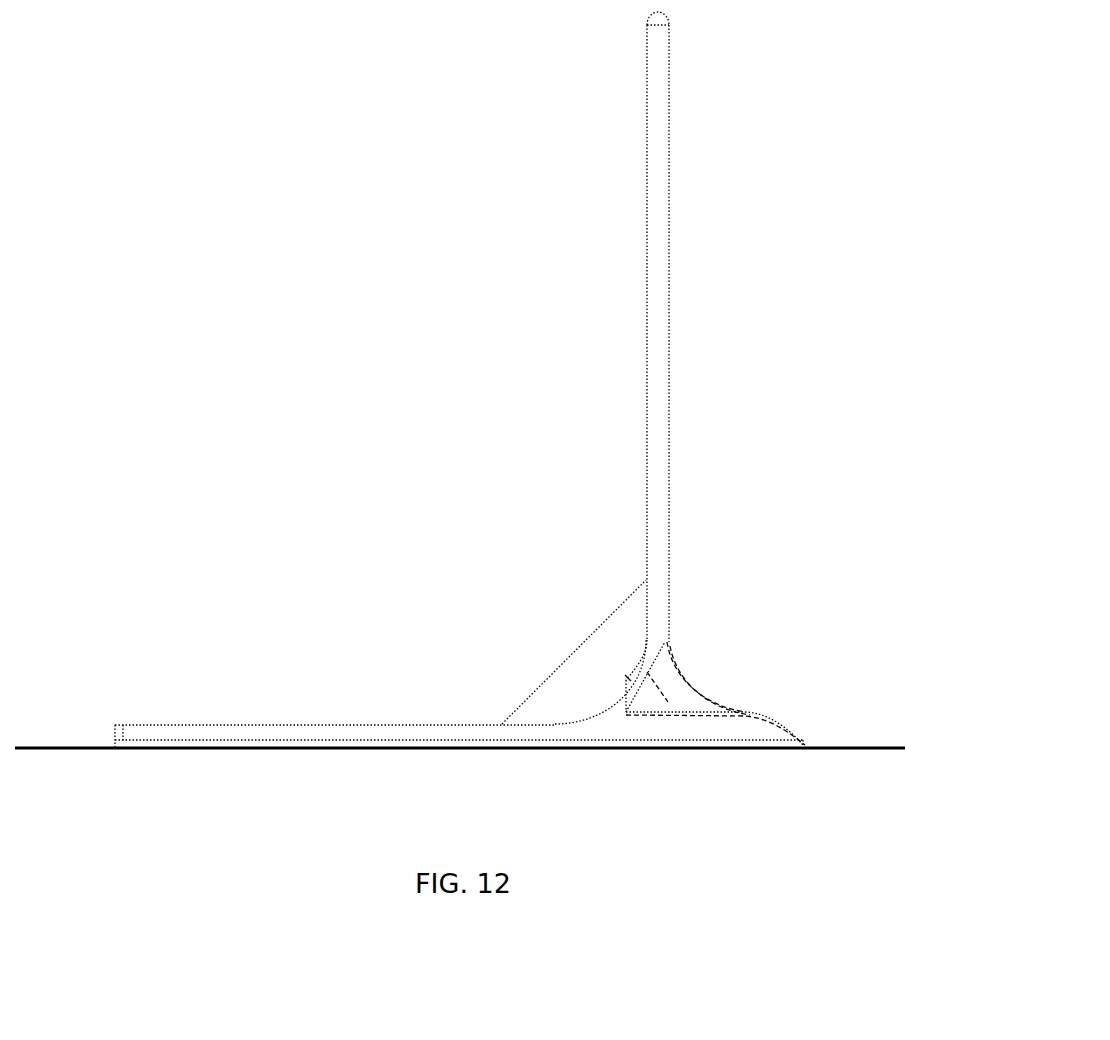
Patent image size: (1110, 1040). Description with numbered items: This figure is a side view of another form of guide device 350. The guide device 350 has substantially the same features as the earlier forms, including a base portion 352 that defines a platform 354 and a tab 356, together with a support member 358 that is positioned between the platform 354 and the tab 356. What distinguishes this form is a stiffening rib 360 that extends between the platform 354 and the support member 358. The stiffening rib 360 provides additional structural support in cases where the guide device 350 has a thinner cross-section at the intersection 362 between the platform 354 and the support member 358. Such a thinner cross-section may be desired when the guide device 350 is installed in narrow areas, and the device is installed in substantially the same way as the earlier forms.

The guide device 350 is at (389, 181).
The base portion 352 is at (365, 712).
The platform 354 is at (232, 735).
The tab 356 is at (730, 727).
The support member 358 is at (655, 68).
The stiffening rib 360 is at (567, 692).
The intersection 362 is at (612, 643).